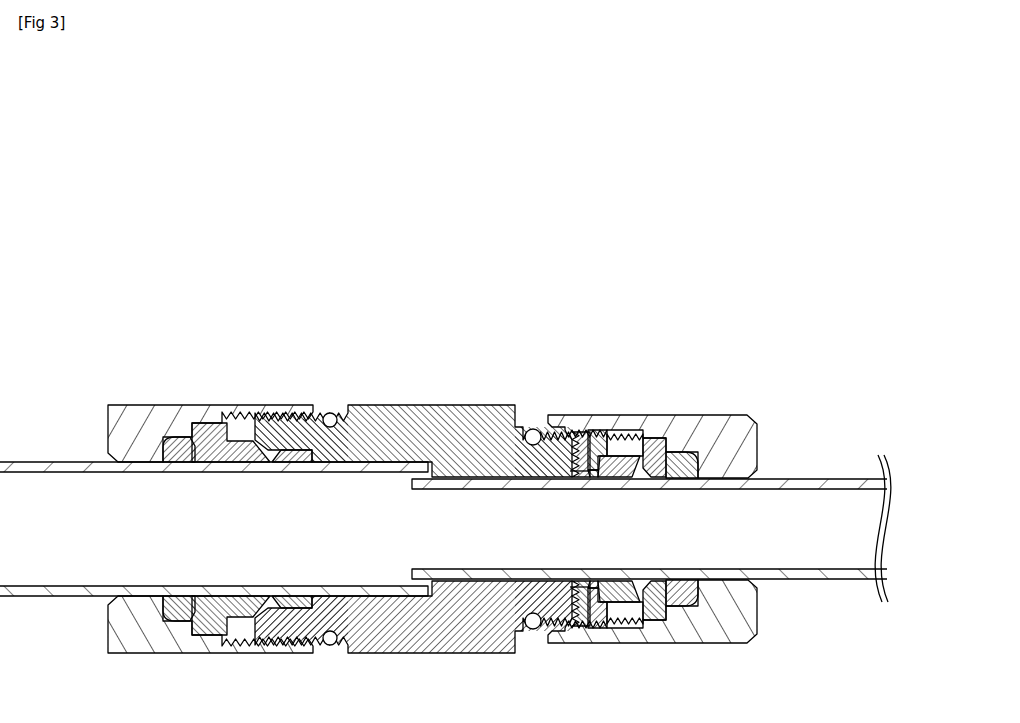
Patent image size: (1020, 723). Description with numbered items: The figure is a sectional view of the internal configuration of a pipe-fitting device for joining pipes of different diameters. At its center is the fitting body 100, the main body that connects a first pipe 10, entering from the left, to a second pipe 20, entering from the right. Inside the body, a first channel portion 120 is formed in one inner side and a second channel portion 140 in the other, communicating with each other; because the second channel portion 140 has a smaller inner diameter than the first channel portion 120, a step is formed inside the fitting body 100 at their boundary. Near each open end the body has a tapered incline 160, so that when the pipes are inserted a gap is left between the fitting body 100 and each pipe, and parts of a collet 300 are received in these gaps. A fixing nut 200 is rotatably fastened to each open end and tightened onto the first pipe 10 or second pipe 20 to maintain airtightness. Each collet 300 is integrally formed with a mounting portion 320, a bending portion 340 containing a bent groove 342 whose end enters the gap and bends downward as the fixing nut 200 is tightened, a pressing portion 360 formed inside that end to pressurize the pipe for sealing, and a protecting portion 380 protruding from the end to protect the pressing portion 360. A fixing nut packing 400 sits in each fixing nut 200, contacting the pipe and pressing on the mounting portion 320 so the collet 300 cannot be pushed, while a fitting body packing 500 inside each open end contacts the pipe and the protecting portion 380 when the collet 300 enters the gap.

The first pipe 10 is at (5, 462).
The second pipe 20 is at (826, 485).
The fitting body 100 is at (430, 405).
The first channel portion 120 is at (370, 452).
The second channel portion 140 is at (470, 470).
The tapered incline 160 is at (277, 456).
The fixing nut 200 is at (142, 417).
The collet 300 is at (652, 417).
The mounting portion 320 is at (655, 440).
The bending portion 340 is at (625, 440).
The inclined surface member 342 is at (625, 465).
The pressing portion 360 is at (600, 440).
The protecting portion 380 is at (590, 432).
The fixing nut packing 400 is at (688, 478).
The fitting body packing 500 is at (577, 478).